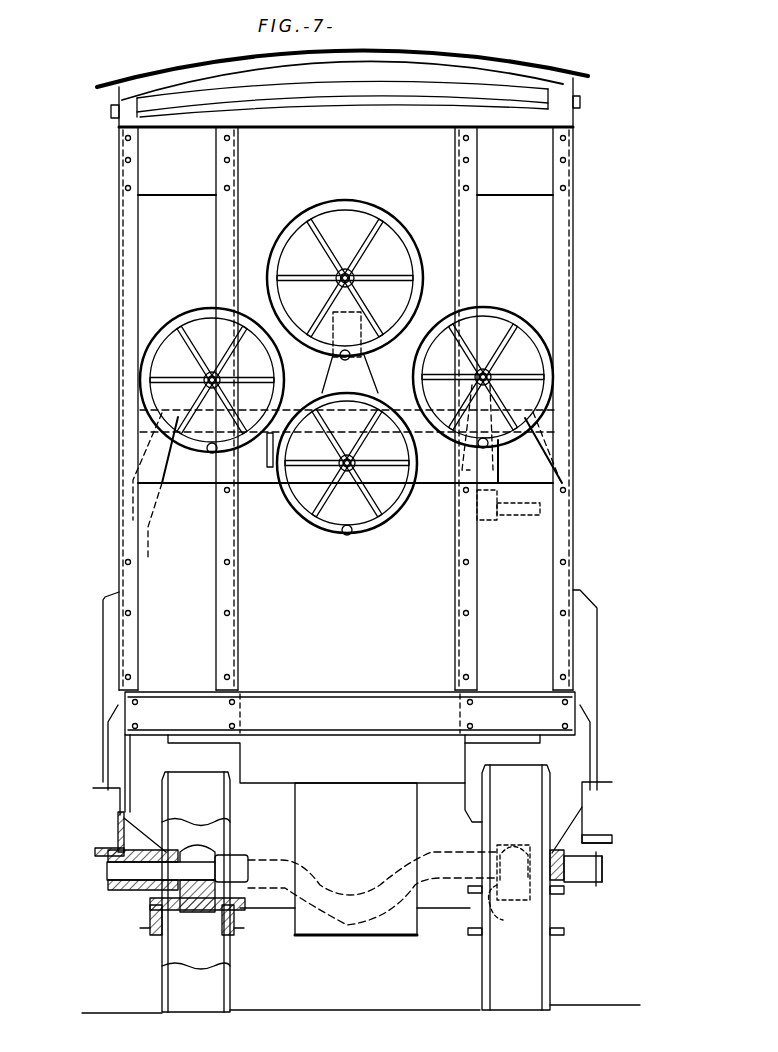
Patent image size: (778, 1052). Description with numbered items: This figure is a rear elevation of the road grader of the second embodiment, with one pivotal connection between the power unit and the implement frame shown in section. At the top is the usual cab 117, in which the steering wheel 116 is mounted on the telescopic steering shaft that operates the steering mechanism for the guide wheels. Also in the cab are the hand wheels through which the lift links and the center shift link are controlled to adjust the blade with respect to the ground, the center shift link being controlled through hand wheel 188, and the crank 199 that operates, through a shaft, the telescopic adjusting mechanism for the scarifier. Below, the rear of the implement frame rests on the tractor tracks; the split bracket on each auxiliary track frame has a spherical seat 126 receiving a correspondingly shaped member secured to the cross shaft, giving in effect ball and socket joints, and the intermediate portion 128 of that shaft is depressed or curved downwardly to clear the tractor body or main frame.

The steering wheel 116 is at (362, 205).
The cab 117 is at (577, 148).
The spherical seat 126 is at (165, 896).
The intermediate portion of shaft 128 is at (348, 900).
The hand wheel 188 is at (392, 506).
The crank 199 is at (522, 512).